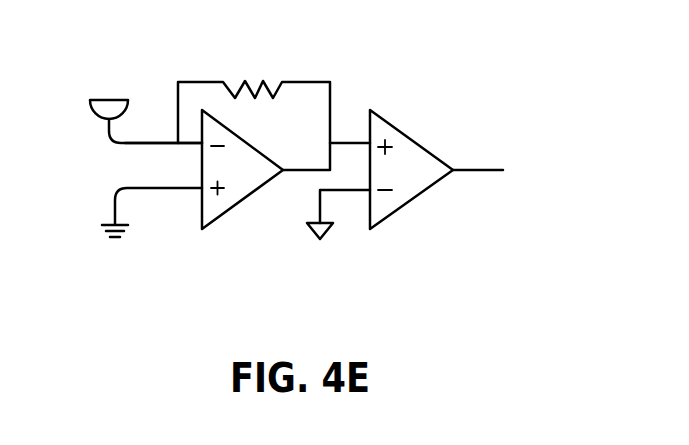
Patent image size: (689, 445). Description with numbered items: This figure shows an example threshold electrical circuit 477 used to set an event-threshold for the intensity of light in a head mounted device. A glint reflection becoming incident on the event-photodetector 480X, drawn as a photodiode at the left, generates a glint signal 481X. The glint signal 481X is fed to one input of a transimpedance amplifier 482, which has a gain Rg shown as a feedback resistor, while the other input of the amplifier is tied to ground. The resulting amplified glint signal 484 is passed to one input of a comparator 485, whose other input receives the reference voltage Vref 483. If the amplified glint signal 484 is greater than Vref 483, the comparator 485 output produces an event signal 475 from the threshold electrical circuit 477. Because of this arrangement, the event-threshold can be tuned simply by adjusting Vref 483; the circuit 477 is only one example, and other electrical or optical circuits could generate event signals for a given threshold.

The threshold electrical circuit 477 is at (545, 73).
The event-photodetector 480X is at (110, 95).
The glint signal 481X is at (113, 147).
The transimpedance amplifier 482 is at (245, 197).
The Vref 483 is at (328, 233).
The amplified glint signal 484 is at (350, 140).
The comparator 485 is at (433, 182).
The event signal 475 is at (488, 178).